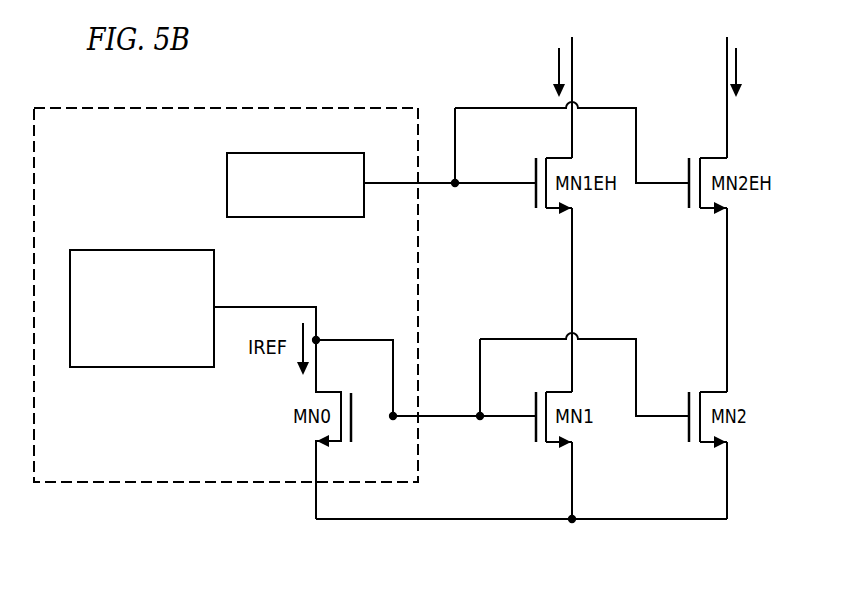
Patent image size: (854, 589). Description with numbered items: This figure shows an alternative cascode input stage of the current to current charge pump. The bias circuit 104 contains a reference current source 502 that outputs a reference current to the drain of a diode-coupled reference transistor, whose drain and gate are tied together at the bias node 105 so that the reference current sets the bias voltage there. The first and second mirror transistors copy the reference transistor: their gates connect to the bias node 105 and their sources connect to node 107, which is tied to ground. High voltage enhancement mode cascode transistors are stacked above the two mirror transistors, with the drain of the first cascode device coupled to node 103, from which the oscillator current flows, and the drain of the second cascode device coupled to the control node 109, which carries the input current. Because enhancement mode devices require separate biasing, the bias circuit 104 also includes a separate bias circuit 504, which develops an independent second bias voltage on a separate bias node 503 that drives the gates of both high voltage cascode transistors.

The bias circuit 104 is at (291, 107).
The separate bias circuit 504 is at (226, 183).
The reference current source 502 is at (157, 356).
The bias node 503 is at (457, 186).
The node 103 is at (573, 83).
The control node 109 is at (726, 108).
The bias node 105 is at (479, 421).
The node 107 is at (568, 516).